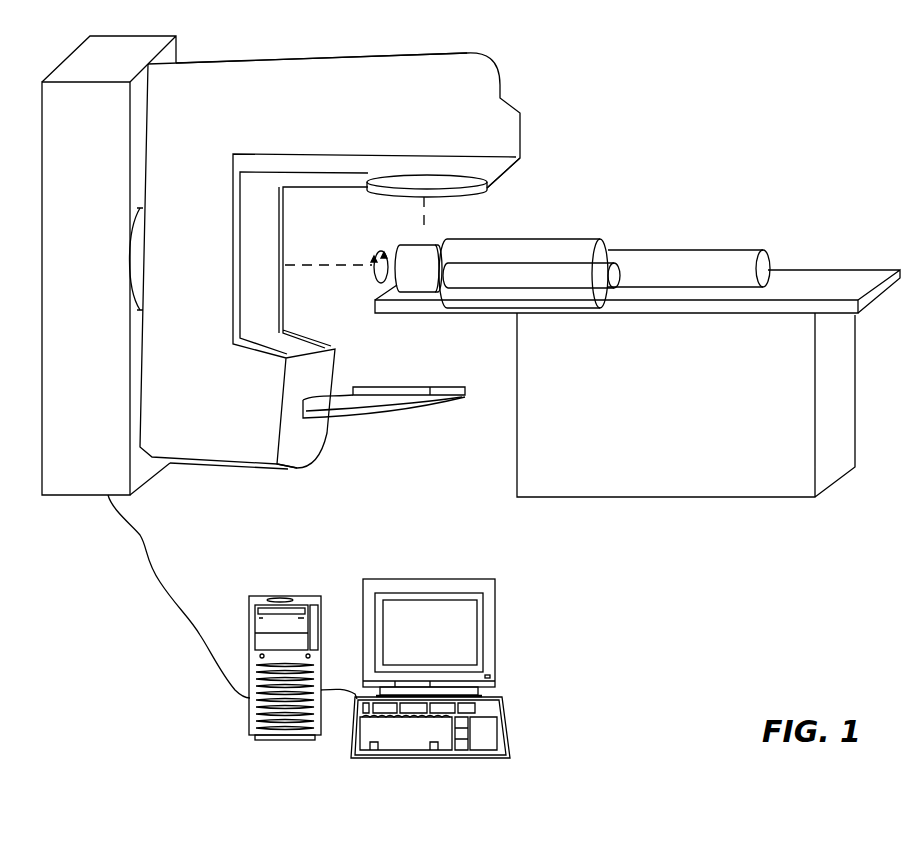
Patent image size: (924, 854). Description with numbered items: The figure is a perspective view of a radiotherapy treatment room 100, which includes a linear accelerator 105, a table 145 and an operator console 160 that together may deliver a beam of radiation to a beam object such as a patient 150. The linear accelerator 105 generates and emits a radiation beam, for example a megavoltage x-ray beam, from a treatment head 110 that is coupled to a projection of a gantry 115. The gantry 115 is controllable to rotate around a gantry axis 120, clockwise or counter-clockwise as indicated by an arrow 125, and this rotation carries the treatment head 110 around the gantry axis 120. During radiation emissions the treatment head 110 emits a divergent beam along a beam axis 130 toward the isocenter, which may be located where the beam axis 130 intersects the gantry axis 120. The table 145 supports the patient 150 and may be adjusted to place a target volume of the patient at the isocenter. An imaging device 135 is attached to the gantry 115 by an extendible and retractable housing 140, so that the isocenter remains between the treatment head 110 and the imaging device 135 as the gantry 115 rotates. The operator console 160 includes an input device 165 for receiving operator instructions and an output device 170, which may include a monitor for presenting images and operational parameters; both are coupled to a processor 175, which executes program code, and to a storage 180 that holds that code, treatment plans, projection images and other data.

The radiotherapy treatment room 100 is at (763, 103).
The linear accelerator 105 is at (545, 108).
The treatment head 110 is at (507, 168).
The gantry 115 is at (307, 53).
The gantry axis 120 is at (355, 268).
The arrow 125 is at (378, 251).
The beam axis 130 is at (425, 223).
The imaging device 135 is at (465, 395).
The extendible and retractable housing 140 is at (362, 418).
The table 145 is at (822, 285).
The patient 150 is at (563, 238).
The operator console 160 is at (409, 647).
The input device 165 is at (508, 742).
The output device 170 is at (495, 628).
The processor 175 is at (297, 638).
The storage 180 is at (284, 595).